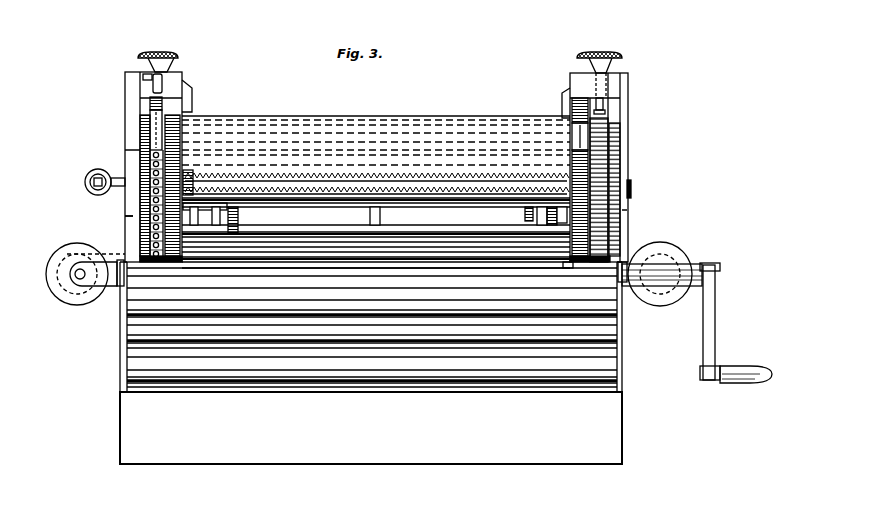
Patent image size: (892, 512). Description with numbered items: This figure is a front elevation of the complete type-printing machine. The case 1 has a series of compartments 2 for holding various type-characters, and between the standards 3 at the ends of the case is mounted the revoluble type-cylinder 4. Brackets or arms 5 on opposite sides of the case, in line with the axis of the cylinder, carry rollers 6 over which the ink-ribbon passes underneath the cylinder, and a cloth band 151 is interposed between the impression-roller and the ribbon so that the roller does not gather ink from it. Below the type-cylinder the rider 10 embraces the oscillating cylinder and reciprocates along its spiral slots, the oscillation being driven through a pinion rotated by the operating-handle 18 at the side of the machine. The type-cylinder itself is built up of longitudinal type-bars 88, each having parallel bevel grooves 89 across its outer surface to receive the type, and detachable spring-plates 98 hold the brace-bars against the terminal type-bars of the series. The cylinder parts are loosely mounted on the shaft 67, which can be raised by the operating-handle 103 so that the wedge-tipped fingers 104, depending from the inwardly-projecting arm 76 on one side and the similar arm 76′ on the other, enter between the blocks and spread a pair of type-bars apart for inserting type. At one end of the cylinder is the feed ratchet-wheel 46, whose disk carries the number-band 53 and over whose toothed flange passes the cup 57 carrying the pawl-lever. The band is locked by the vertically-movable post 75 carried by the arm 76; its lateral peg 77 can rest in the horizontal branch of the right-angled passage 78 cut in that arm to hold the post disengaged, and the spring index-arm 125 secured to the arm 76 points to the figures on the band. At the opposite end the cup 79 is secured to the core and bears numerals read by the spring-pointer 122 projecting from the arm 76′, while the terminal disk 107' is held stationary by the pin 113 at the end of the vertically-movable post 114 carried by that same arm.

The case 1 is at (118, 332).
The compartments 2 is at (371, 366).
The standards 3 is at (125, 216).
The type-cylinder 4 is at (332, 112).
The brackets or arms 5 is at (112, 286).
The rollers 6 is at (86, 300).
The rider 10 is at (565, 265).
The operating-handle 18 is at (738, 366).
The ratchet-wheel 46 is at (140, 150).
The band 53 is at (168, 258).
The cup 57 is at (185, 140).
The shaft 67 is at (641, 188).
The post 75 is at (160, 56).
The arm 76 is at (183, 76).
The arm 76′ is at (572, 73).
The peg 77 is at (153, 88).
The right-angled passage 78 is at (143, 76).
The cup 79 is at (581, 203).
The type-bar 88 is at (332, 172).
The bevel grooves 89 is at (388, 182).
The spring-plates 98 is at (234, 240).
The operating-handle 103 is at (85, 183).
The wedge-tipped fingers 104 is at (193, 114).
The terminal disk 107' is at (629, 190).
The pin 113 is at (604, 108).
The post 114 is at (606, 54).
The spring-pointer 122 is at (580, 138).
The spring index-arm 125 is at (150, 124).
The cloth band 151 is at (356, 262).